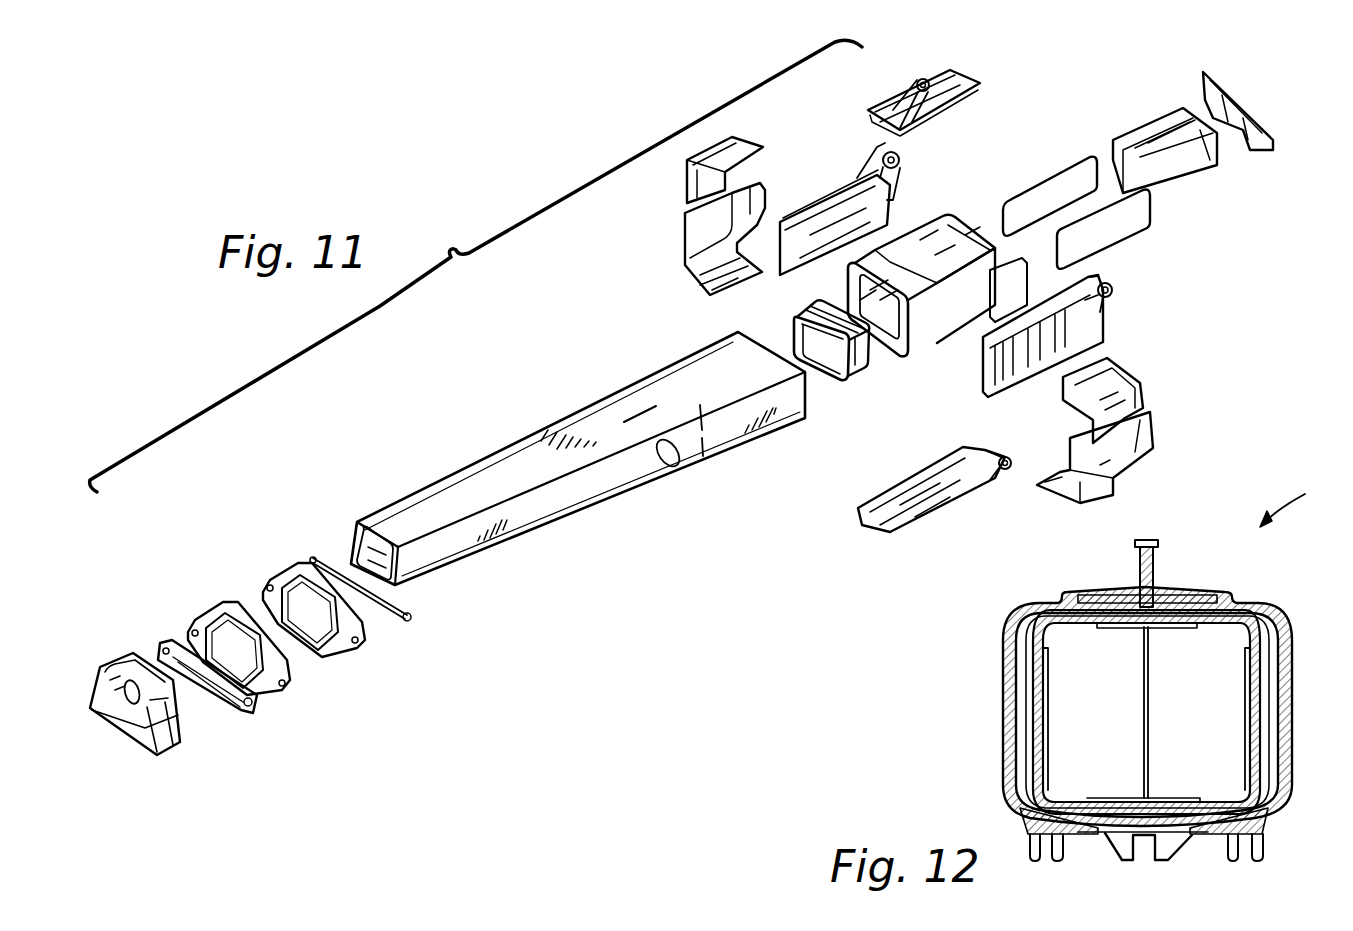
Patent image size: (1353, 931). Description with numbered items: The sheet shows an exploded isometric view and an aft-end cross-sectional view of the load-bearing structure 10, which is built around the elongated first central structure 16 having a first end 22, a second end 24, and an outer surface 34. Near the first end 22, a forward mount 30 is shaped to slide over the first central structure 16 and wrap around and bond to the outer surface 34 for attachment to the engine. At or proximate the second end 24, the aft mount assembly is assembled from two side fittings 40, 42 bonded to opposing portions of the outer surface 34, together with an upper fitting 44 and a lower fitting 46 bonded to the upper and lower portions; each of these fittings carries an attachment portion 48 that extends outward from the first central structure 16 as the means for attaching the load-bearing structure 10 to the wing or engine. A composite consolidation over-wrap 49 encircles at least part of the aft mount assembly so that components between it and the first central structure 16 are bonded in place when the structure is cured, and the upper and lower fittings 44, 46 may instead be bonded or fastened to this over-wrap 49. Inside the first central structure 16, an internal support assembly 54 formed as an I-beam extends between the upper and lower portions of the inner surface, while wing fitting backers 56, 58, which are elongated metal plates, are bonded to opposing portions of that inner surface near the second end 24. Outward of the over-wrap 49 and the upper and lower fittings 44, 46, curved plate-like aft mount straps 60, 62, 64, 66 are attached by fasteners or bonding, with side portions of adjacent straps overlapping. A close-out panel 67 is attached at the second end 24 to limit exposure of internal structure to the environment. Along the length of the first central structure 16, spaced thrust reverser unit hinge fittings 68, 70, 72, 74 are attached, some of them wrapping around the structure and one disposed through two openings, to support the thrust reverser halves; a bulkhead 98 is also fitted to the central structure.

In FIG. 11, the load-bearing structure 10 is at (476, 266).
In FIG. 12, the load-bearing structure 10 is at (1299, 500).
In FIG. 11, the first central structure 16 is at (468, 482).
In FIG. 11, the first end 22 is at (352, 527).
In FIG. 11, the second end 24 is at (760, 348).
In FIG. 11, the forward mount 30 is at (145, 740).
In FIG. 11, the outer surface 34 is at (636, 404).
In FIG. 11, the side fitting 40 is at (812, 222).
In FIG. 12, the side fitting 40 is at (1265, 788).
In FIG. 11, the side fitting 42 is at (1100, 312).
In FIG. 12, the side fitting 42 is at (1012, 780).
In FIG. 11, the upper fitting 44 is at (978, 85).
In FIG. 12, the upper fitting 44 is at (1158, 580).
In FIG. 11, the lower fitting 46 is at (920, 500).
In FIG. 12, the lower fitting 46 is at (1170, 838).
In FIG. 11, the attachment portion 48 is at (923, 79).
In FIG. 11, the composite consolidation over-wrap 49 is at (915, 225).
In FIG. 12, the composite consolidation over-wrap 49 is at (1028, 607).
In FIG. 11, the internal support assembly 54 is at (1138, 128).
In FIG. 12, the internal support assembly 54 is at (1150, 700).
In FIG. 11, the wing fitting backer 56 is at (1130, 226).
In FIG. 12, the wing fitting backer 56 is at (1055, 718).
In FIG. 11, the wing fitting backer 58 is at (1050, 183).
In FIG. 12, the wing fitting backer 58 is at (1240, 740).
In FIG. 11, the aft mount strap 60 is at (1142, 398).
In FIG. 12, the aft mount strap 60 is at (1060, 597).
In FIG. 11, the aft mount strap 62 is at (748, 148).
In FIG. 12, the aft mount strap 62 is at (1228, 600).
In FIG. 11, the aft mount strap 64 is at (1142, 445).
In FIG. 12, the aft mount strap 64 is at (1035, 832).
In FIG. 11, the aft mount strap 66 is at (688, 258).
In FIG. 12, the aft mount strap 66 is at (1265, 830).
In FIG. 11, the close-out panel 67 is at (1245, 145).
In FIG. 11, the thrust reverser unit hinge fitting 68 is at (247, 712).
In FIG. 11, the thrust reverser unit hinge fitting 70 is at (285, 692).
In FIG. 11, the thrust reverser unit hinge fitting 72 is at (360, 650).
In FIG. 11, the thrust reverser unit hinge fitting 74 is at (418, 612).
In FIG. 11, the bulkhead 98 is at (825, 375).